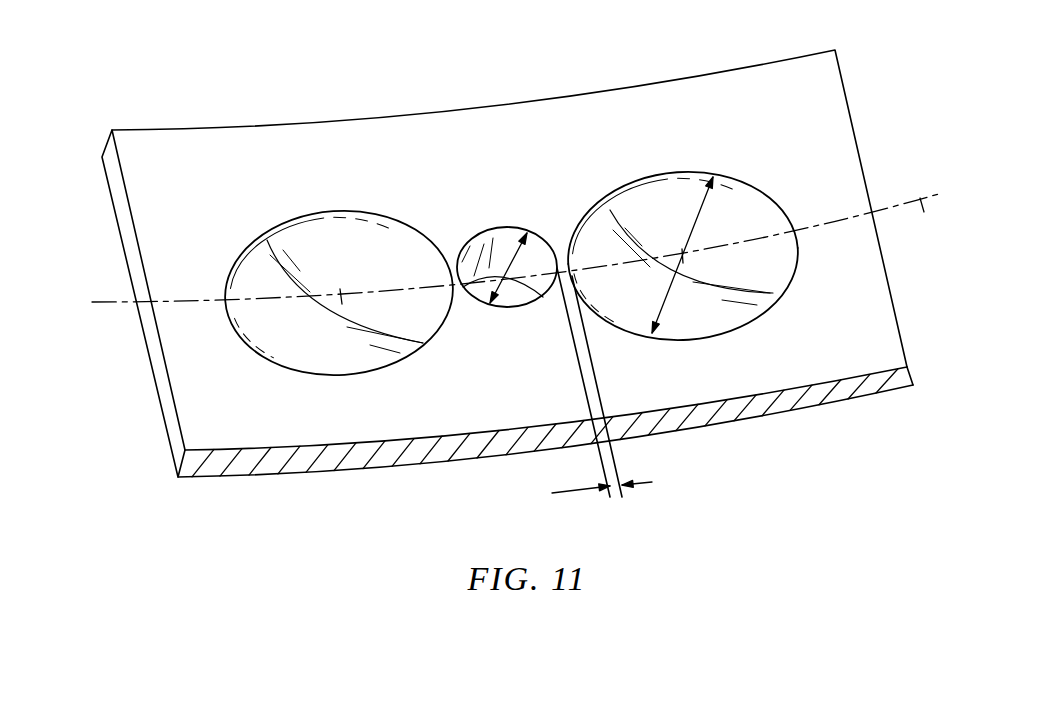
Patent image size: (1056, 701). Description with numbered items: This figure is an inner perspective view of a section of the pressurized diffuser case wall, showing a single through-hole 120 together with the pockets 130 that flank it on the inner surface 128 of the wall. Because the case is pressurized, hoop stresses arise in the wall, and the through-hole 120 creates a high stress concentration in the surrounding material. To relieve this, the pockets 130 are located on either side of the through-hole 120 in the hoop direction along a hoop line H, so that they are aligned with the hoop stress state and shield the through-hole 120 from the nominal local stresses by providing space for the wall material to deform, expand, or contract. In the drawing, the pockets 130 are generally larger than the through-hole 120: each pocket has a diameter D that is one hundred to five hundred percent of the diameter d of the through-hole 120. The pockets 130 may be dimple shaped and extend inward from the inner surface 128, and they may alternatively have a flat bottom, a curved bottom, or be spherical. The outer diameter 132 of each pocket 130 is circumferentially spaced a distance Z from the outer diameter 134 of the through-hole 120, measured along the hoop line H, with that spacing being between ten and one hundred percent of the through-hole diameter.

The through-hole 120 is at (466, 214).
The inner surface 128 is at (557, 280).
The pocket 130 is at (692, 292).
The outer diameter of pocket 132 is at (727, 334).
The outer diameter of through-hole 134 is at (508, 227).
The diameter of through-hole d is at (518, 257).
The diameter of pocket D is at (654, 316).
The hoop line H is at (922, 203).
The distance Z is at (591, 493).